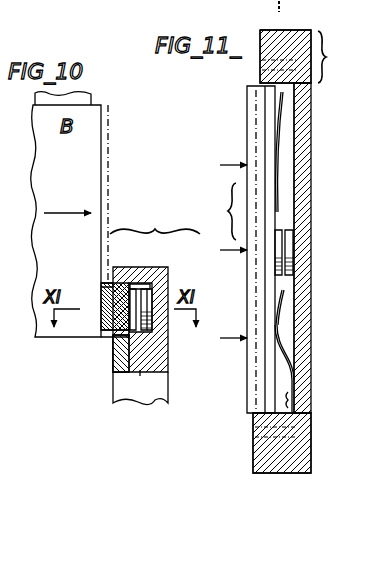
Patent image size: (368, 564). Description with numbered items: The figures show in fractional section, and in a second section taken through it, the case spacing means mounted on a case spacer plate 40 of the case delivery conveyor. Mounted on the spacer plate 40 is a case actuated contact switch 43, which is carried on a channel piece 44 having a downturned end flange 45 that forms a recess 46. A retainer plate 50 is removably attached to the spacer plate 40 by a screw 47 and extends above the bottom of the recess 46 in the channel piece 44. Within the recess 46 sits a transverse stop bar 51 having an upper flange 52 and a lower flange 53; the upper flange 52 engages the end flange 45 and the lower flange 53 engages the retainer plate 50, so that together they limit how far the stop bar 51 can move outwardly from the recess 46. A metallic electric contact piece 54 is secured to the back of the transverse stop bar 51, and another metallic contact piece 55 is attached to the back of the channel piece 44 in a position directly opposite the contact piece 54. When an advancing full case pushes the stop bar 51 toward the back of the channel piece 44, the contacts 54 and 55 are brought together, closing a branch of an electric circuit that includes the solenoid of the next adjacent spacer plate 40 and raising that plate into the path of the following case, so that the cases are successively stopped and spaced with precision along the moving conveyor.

In FIG. 10, the case spacer plate 40 is at (140, 401).
In FIG. 11, the case spacer plate 40 is at (301, 251).
In FIG. 10, the case actuated contact switch 43 is at (155, 220).
In FIG. 11, the case actuated contact switch 43 is at (220, 211).
In FIG. 10, the channel piece 44 is at (162, 342).
In FIG. 11, the channel piece 44 is at (300, 162).
In FIG. 10, the downturned end flange 45 is at (116, 283).
In FIG. 10, the recess 46 is at (143, 282).
In FIG. 11, the recess 46 is at (284, 185).
In FIG. 10, the screw 47 is at (140, 382).
In FIG. 11, the screw 47 is at (296, 72).
In FIG. 10, the retainer plate 50 is at (123, 344).
In FIG. 11, the retainer plate 50 is at (285, 38).
In FIG. 10, the transverse stop bar 51 is at (102, 321).
In FIG. 11, the transverse stop bar 51 is at (250, 290).
In FIG. 10, the upper flange 52 is at (124, 282).
In FIG. 11, the upper flange 52 is at (273, 308).
In FIG. 10, the lower flange 53 is at (127, 333).
In FIG. 10, the metallic electric contact piece 54 is at (147, 285).
In FIG. 11, the metallic electric contact piece 54 is at (281, 245).
In FIG. 10, the metallic contact piece 55 is at (148, 297).
In FIG. 11, the metallic contact piece 55 is at (290, 258).